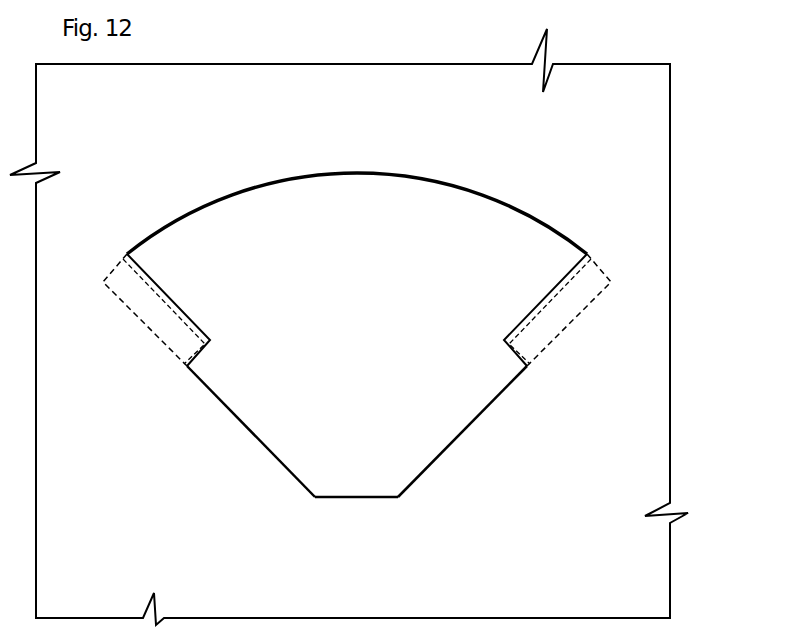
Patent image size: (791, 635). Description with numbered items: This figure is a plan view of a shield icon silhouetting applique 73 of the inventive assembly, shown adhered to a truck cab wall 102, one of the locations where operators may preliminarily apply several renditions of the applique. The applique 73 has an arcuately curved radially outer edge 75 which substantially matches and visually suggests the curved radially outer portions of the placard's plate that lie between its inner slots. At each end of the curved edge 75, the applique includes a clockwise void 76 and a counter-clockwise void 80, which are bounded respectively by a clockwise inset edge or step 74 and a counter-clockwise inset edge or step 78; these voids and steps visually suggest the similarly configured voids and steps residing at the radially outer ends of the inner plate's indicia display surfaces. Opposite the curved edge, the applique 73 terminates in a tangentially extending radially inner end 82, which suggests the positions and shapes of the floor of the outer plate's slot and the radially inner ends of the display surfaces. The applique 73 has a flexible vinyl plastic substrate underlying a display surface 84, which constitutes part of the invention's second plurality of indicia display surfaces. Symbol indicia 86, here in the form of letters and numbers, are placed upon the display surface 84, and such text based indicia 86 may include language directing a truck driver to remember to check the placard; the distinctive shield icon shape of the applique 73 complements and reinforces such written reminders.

The shield icon silhouetting applique 73 is at (357, 330).
The clockwise inset edge or step 74 is at (538, 297).
The arcuately curved radially outer edge 75 is at (275, 180).
The clockwise void 76 is at (567, 303).
The counter-clockwise inset edge or step 78 is at (160, 284).
The counter-clockwise void 80 is at (162, 322).
The tangentially extending radially inner end 82 is at (358, 500).
The display surface 84 is at (277, 422).
The symbol indicia 86 is at (380, 255).
The truck cab wall 102 is at (623, 451).